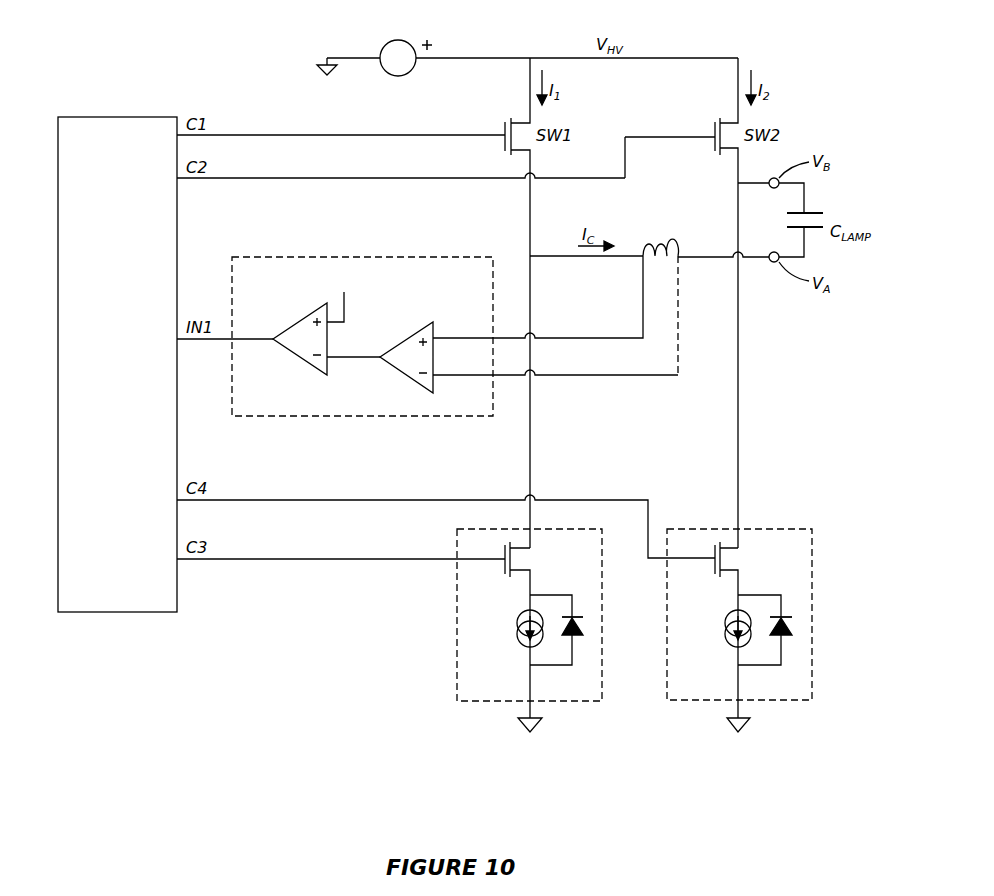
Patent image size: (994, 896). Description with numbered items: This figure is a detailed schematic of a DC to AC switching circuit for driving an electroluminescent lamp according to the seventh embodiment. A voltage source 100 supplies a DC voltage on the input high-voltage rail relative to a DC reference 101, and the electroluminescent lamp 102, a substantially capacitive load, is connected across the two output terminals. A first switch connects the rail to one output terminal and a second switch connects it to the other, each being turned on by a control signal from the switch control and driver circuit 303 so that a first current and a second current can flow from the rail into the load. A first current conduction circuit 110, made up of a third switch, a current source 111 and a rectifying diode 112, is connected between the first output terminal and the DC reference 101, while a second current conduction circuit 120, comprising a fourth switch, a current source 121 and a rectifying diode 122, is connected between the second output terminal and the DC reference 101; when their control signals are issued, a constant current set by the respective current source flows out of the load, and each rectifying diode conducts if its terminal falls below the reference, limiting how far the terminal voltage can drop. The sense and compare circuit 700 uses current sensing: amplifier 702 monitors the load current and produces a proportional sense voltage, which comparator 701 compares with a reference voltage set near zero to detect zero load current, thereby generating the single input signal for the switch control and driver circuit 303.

The voltage source 100 is at (390, 42).
The switch control and driver circuit 303 is at (58, 172).
The sense and compare circuit 700 is at (335, 354).
The comparator 701 is at (292, 323).
The amplifier 702 is at (435, 323).
The electroluminescent lamp 102 is at (823, 207).
The first current conduction circuit 110 is at (508, 623).
The current source 111 is at (516, 632).
The rectifying diode 112 is at (578, 642).
The DC reference 101 is at (518, 722).
The second current conduction circuit 120 is at (762, 623).
The current source 121 is at (724, 632).
The rectifying diode 122 is at (786, 642).